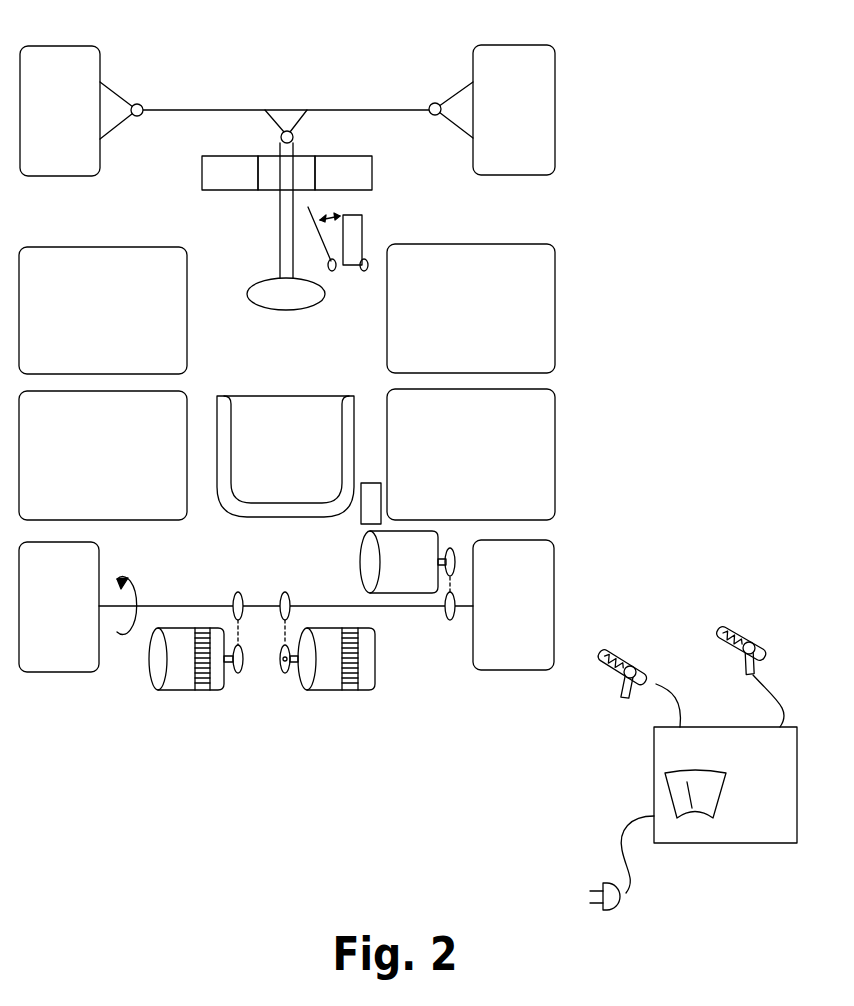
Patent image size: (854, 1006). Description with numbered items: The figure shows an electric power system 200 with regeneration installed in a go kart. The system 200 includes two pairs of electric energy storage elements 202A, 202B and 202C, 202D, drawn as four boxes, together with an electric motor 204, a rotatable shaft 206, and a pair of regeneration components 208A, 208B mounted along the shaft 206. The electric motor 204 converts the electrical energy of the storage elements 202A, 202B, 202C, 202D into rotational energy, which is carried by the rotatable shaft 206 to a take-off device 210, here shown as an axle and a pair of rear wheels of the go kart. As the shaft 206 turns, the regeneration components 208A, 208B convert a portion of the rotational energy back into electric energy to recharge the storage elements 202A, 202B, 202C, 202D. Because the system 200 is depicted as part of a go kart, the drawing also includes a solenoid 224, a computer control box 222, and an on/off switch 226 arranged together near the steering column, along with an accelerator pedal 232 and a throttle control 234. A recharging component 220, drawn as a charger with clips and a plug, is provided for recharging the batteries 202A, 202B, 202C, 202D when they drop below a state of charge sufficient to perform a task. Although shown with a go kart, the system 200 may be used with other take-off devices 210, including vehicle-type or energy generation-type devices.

The electric power system 200 is at (79, 793).
The electric energy storage element 202A is at (81, 323).
The electric energy storage element 202B is at (81, 466).
The electric energy storage element 202C is at (447, 323).
The electric energy storage element 202D is at (447, 468).
The electric motor 204 is at (392, 575).
The rotatable shaft 206 is at (423, 608).
The regeneration component 208A is at (178, 682).
The regeneration component 208B is at (325, 682).
The take-off device 210 is at (554, 577).
The recharging component 220 is at (748, 843).
The computer control box 222 is at (305, 167).
The solenoid 224 is at (230, 168).
The on/off switch 226 is at (352, 167).
The accelerator pedal 232 is at (362, 222).
The throttle control 234 is at (367, 512).